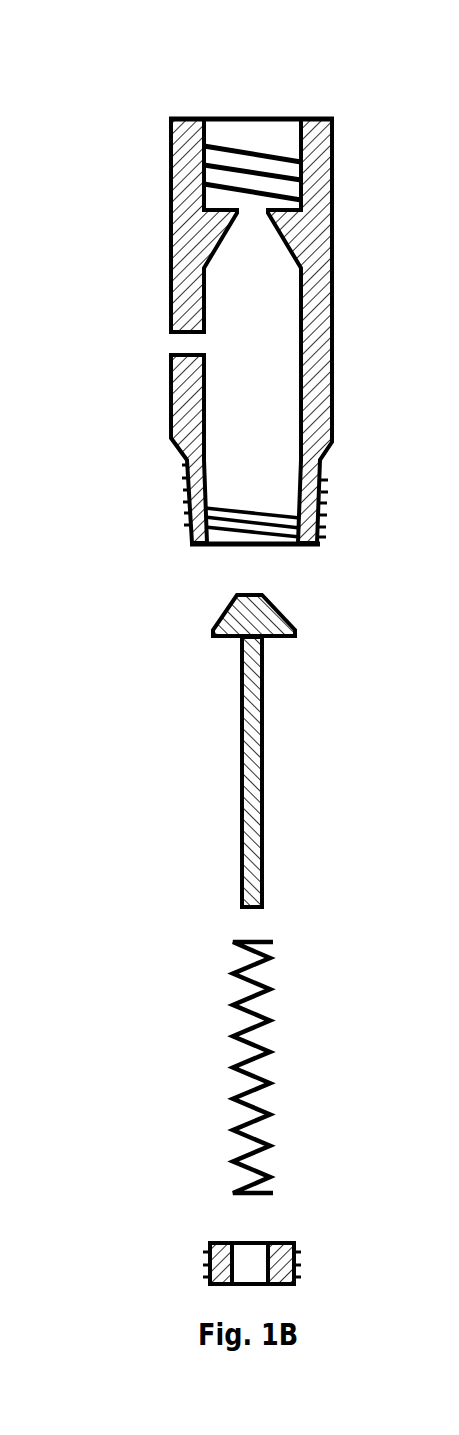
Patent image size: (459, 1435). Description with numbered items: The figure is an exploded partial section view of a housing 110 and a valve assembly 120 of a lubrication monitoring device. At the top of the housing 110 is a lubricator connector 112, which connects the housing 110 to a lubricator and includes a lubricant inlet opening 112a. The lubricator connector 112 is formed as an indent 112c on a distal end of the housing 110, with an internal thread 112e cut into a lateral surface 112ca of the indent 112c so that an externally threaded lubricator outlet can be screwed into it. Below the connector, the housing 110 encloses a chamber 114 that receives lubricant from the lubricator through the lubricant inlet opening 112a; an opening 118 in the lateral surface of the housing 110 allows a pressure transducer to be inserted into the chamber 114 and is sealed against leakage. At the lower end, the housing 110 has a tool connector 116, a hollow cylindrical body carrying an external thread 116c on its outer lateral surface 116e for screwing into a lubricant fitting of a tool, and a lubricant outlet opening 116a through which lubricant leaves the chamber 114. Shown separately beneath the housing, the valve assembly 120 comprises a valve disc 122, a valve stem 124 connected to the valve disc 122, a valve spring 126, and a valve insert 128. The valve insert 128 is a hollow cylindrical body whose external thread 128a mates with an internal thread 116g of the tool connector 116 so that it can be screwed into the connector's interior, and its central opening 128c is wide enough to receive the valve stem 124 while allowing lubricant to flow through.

The housing 110 is at (102, 117).
The lubricator connector 112 is at (162, 122).
The lubricant inlet opening 112a is at (248, 213).
The indent 112c is at (229, 108).
The lateral surface 112ca is at (273, 133).
The internal thread 112e is at (245, 153).
The chamber 114 is at (273, 353).
The tool connector 116 is at (322, 457).
The lubricant outlet opening 116a is at (233, 545).
The external thread 116c is at (185, 513).
The outer lateral surface 116e is at (185, 460).
The internal thread 116g is at (270, 532).
The opening 118 is at (180, 345).
The valve assembly 120 is at (103, 585).
The valve disc 122 is at (215, 628).
The valve stem 124 is at (242, 755).
The valve spring 126 is at (233, 1037).
The valve insert 128 is at (218, 1252).
The external thread 128a is at (207, 1260).
The central opening 128c is at (250, 1267).